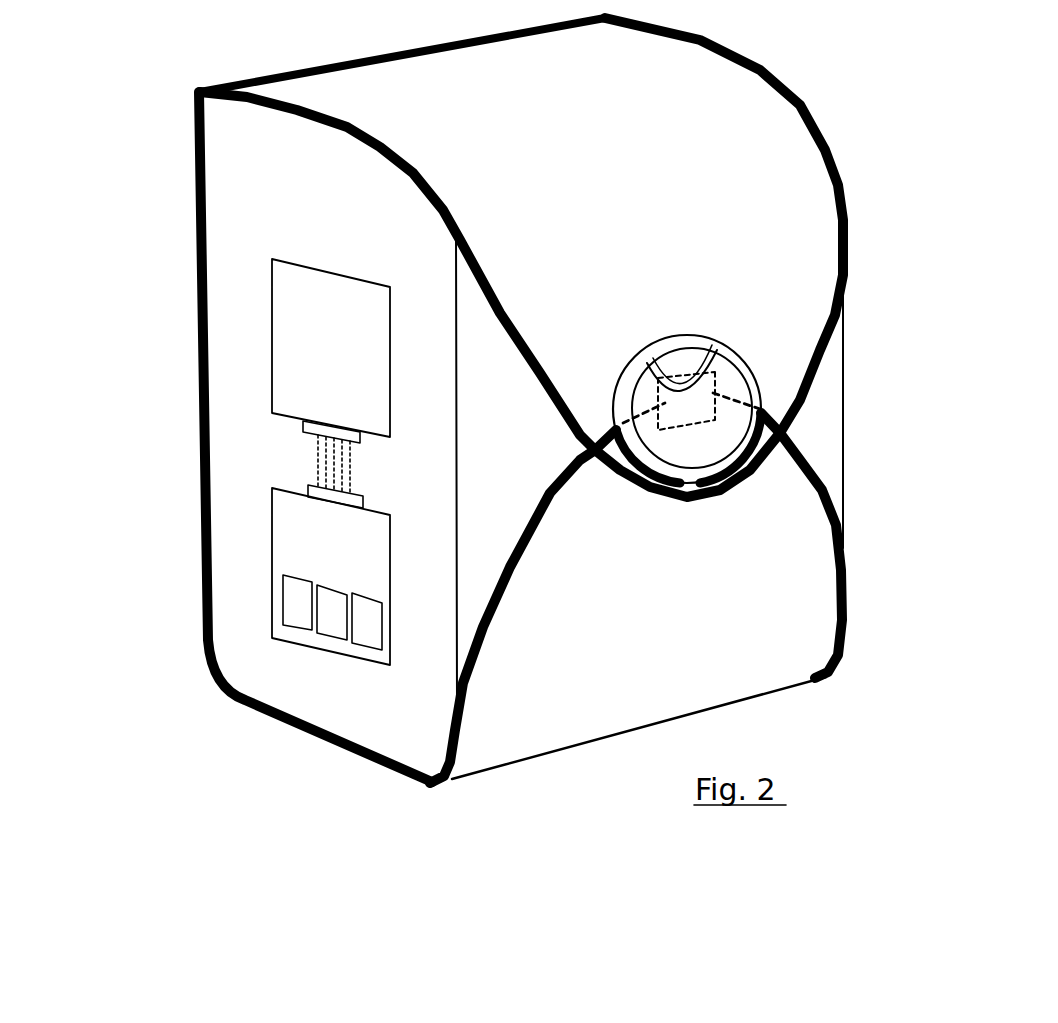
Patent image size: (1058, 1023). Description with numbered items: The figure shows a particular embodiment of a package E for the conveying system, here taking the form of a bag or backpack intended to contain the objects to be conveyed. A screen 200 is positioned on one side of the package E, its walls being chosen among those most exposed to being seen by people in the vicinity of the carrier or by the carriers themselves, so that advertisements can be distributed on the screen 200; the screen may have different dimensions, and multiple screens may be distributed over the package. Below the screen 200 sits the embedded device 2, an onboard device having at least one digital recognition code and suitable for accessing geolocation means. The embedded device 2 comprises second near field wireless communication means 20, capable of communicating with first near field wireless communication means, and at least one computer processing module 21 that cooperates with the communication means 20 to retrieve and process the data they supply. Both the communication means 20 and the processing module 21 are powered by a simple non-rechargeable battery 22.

The package E is at (893, 131).
The screen 200 is at (264, 365).
The embedded device 2 is at (256, 577).
The second near field wireless communication means 20 is at (280, 623).
The computer processing module 21 is at (328, 637).
The non-rechargeable battery 22 is at (372, 647).